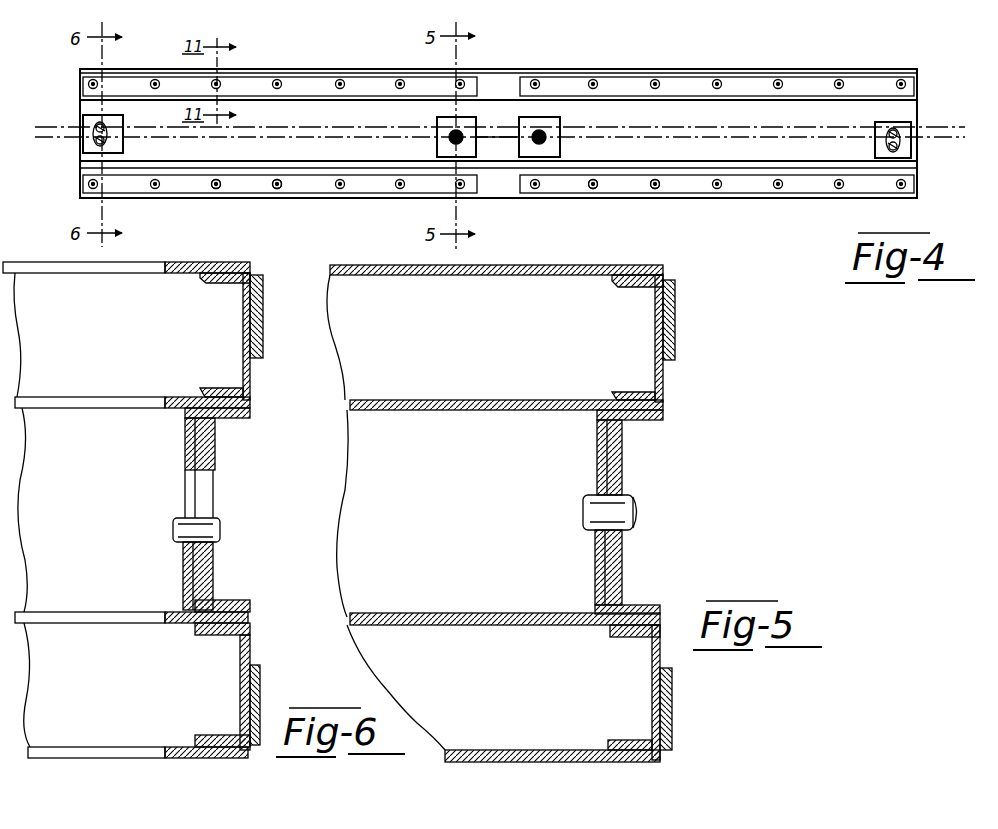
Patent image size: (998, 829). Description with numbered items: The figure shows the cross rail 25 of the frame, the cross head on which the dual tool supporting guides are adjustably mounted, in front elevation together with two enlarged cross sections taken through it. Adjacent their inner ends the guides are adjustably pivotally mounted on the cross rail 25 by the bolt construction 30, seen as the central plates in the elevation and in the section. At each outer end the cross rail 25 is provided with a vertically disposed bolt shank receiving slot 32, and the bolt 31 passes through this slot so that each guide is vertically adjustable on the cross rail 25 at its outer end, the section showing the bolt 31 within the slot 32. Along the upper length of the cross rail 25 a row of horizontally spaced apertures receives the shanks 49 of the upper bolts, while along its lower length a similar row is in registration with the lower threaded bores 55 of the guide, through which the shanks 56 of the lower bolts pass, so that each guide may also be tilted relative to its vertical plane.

In FIG. 4, the cross rail 25 is at (648, 161).
In FIG. 6, the cross rail 25 is at (92, 521).
In FIG. 5, the cross rail 25 is at (477, 521).
In FIG. 4, the bolt construction 30 is at (451, 141).
In FIG. 5, the bolt construction 30 is at (622, 512).
In FIG. 4, the bolt 31 is at (96, 141).
In FIG. 6, the bolt 31 is at (220, 528).
In FIG. 4, the vertical slot 32 is at (96, 125).
In FIG. 6, the vertical slot 32 is at (204, 500).
In FIG. 4, the bolt shank 49 is at (90, 82).
In FIG. 4, the screw threaded bolt shank receiving bores 55 is at (89, 184).
In FIG. 4, the bolt shank 56 is at (277, 194).